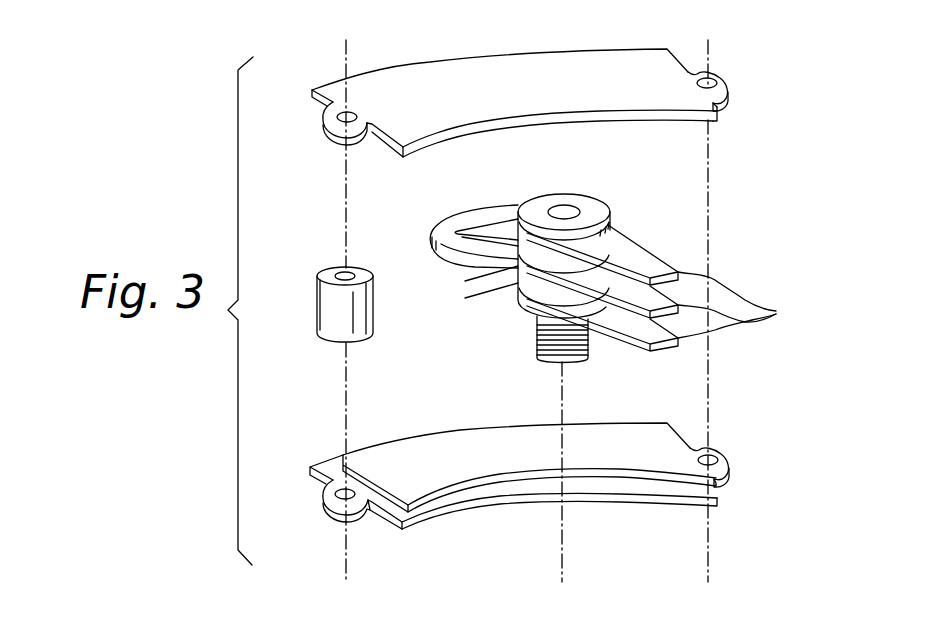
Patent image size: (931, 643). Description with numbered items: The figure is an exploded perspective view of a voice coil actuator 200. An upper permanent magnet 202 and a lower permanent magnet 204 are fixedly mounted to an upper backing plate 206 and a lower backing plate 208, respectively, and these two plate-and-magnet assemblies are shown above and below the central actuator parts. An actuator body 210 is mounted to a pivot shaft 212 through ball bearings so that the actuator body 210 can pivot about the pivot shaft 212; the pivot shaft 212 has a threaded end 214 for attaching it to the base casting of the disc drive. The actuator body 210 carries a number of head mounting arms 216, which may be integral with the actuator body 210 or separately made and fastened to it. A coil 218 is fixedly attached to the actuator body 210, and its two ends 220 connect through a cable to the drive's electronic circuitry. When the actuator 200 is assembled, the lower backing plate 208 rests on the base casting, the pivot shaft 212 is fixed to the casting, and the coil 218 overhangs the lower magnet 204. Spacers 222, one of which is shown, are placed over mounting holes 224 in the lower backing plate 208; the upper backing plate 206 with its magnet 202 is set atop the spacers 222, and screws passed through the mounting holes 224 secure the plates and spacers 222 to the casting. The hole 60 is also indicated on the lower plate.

The mounting hole 60 is at (718, 458).
The voice coil actuator 200 is at (728, 232).
The upper permanent magnet 202 is at (438, 143).
The lower permanent magnet 204 is at (558, 451).
The upper backing plate 206 is at (330, 88).
The lower backing plate 208 is at (487, 471).
The actuator body 210 is at (594, 209).
The pivot shaft 212 is at (567, 210).
The threaded end 214 is at (535, 351).
The head mounting arms 216 is at (673, 288).
The coil 218 is at (450, 223).
The ends of the coil 220 is at (463, 277).
The spacers 222 is at (317, 306).
The mounting holes 224 is at (334, 493).